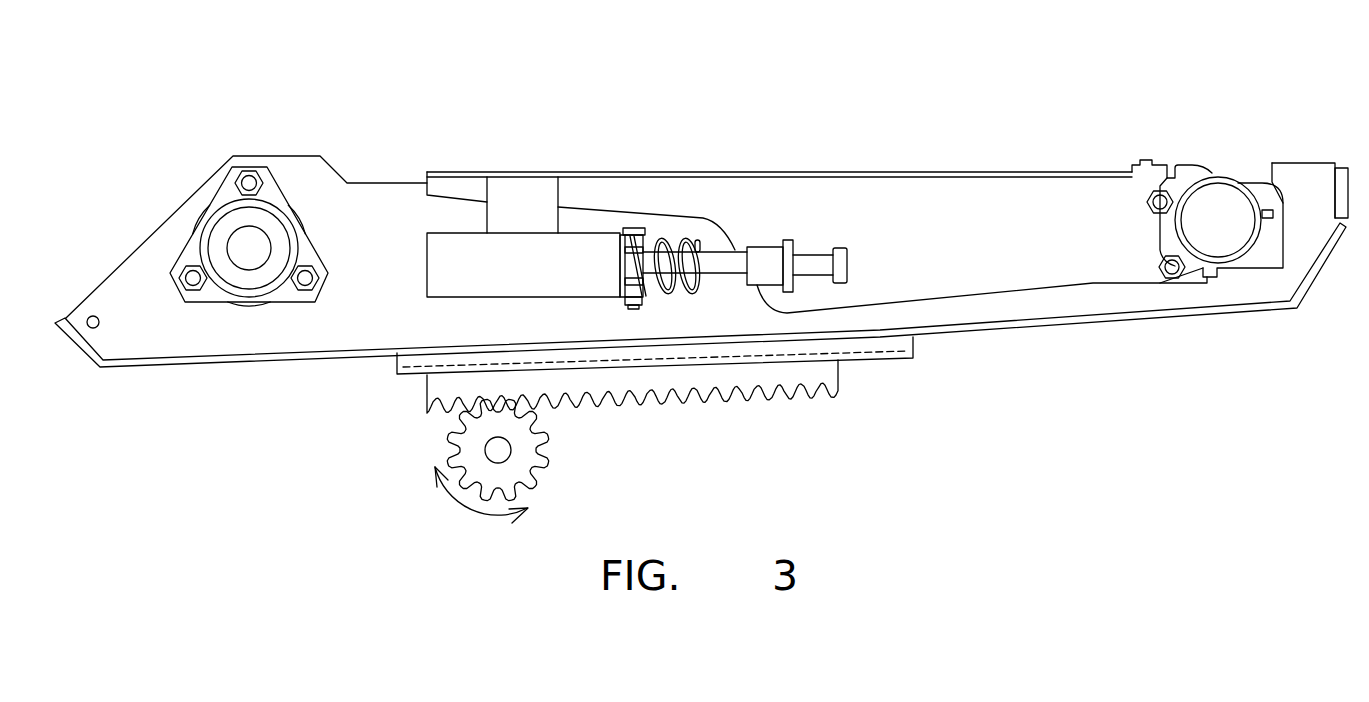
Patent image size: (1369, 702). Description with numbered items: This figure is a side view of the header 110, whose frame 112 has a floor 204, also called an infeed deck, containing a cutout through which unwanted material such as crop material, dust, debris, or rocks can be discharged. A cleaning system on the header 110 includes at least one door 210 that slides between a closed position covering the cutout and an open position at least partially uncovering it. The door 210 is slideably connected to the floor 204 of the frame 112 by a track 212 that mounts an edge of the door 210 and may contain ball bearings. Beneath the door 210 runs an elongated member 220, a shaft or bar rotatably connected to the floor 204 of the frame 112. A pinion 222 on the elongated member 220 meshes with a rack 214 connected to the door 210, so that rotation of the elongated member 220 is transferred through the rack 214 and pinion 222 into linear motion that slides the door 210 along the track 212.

The header 110 is at (1050, 117).
The frame 112 is at (156, 230).
The floor 204 is at (237, 362).
The door 210 is at (882, 358).
The track 212 is at (913, 348).
The rack 214 is at (723, 402).
The elongated member 220 is at (512, 458).
The pinion 222 is at (547, 435).